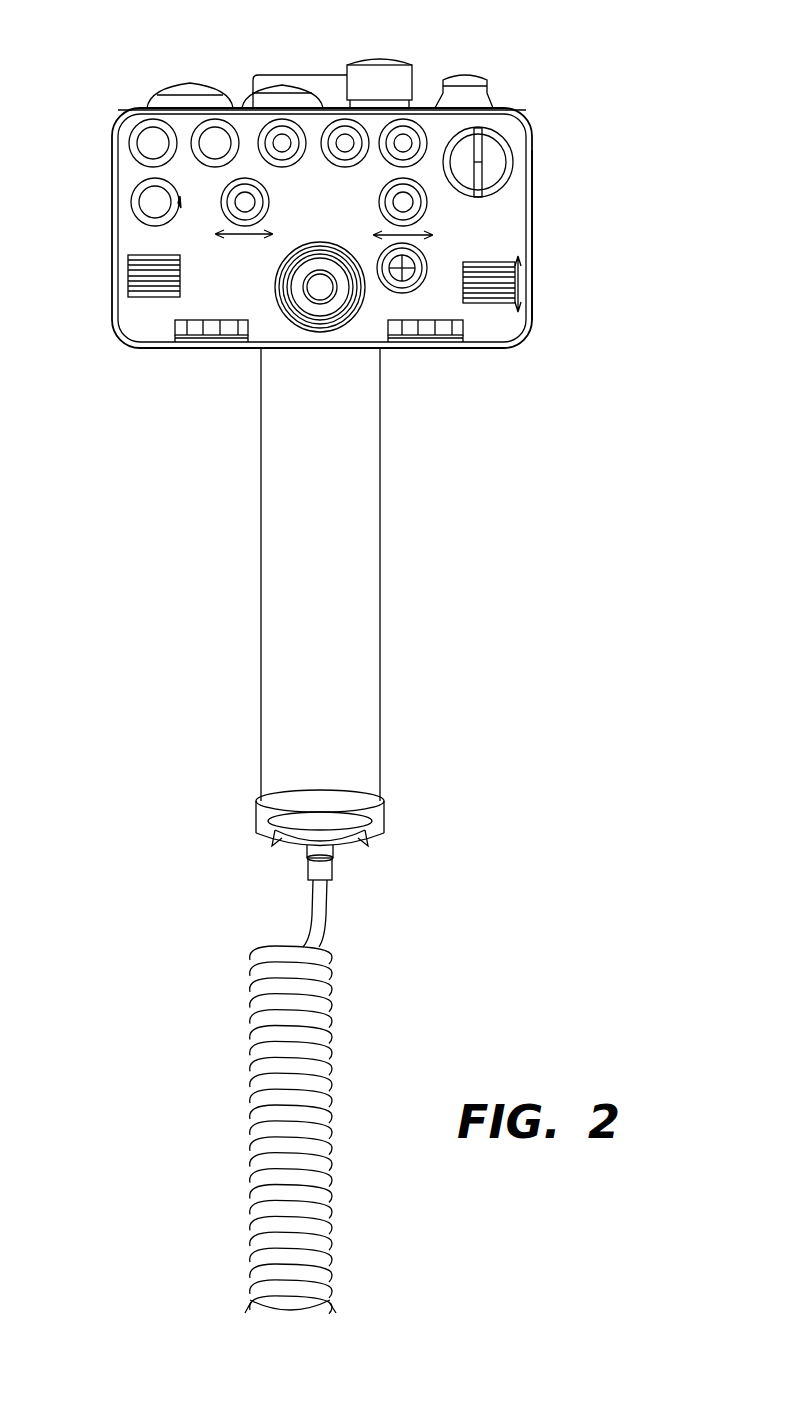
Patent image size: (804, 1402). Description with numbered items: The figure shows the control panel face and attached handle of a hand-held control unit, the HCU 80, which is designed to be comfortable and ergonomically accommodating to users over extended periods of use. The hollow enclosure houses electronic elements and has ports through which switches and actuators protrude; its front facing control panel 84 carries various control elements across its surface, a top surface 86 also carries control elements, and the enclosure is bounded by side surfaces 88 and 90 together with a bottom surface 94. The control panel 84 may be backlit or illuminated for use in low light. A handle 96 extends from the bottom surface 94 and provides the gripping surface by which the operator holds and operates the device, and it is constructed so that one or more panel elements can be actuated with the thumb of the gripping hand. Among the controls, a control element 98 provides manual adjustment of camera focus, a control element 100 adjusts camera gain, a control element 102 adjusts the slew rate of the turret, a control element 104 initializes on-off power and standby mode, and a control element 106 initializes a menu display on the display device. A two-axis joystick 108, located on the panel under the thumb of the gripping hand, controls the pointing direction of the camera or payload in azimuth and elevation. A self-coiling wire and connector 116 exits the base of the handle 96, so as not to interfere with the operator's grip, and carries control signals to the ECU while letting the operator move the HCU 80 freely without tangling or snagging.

The hand-held control unit (HCU) 80 is at (684, 39).
The front facing control panel 84 is at (510, 210).
The top surface 86 is at (420, 108).
The side surface 88 is at (112, 143).
The side surface 90 is at (532, 240).
The bottom surface 94 is at (186, 348).
The handle 96 is at (380, 514).
The control element 98 is at (128, 278).
The control element 100 is at (510, 280).
The control element 102 is at (150, 202).
The control element 104 is at (490, 160).
The control element 106 is at (282, 143).
The two-axis joystick 108 is at (320, 287).
The wire and connector 116 is at (258, 1020).